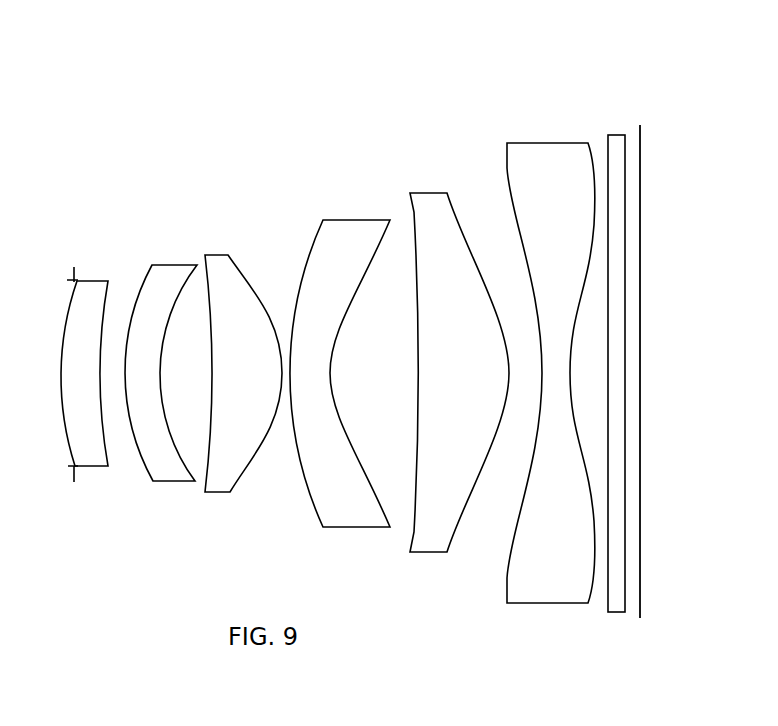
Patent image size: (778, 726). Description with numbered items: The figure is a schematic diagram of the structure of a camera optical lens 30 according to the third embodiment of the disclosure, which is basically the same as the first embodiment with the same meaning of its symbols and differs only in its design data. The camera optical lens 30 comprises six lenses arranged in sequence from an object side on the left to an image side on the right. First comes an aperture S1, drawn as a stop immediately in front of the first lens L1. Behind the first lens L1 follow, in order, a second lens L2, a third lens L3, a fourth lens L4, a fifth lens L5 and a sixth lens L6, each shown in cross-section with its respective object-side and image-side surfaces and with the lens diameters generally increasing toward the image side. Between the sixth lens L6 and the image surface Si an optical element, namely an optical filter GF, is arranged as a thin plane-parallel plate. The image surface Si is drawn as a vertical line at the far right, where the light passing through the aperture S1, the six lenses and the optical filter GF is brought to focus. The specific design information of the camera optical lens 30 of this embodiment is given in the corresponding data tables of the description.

The camera optical lens 30 is at (365, 80).
The aperture S1 is at (62, 368).
The first lens L1 is at (88, 355).
The second lens L2 is at (161, 355).
The third lens L3 is at (243, 355).
The fourth lens L4 is at (340, 356).
The fifth lens L5 is at (459, 356).
The sixth lens L6 is at (551, 355).
The optical filter GF is at (616, 357).
The image surface Si is at (643, 354).